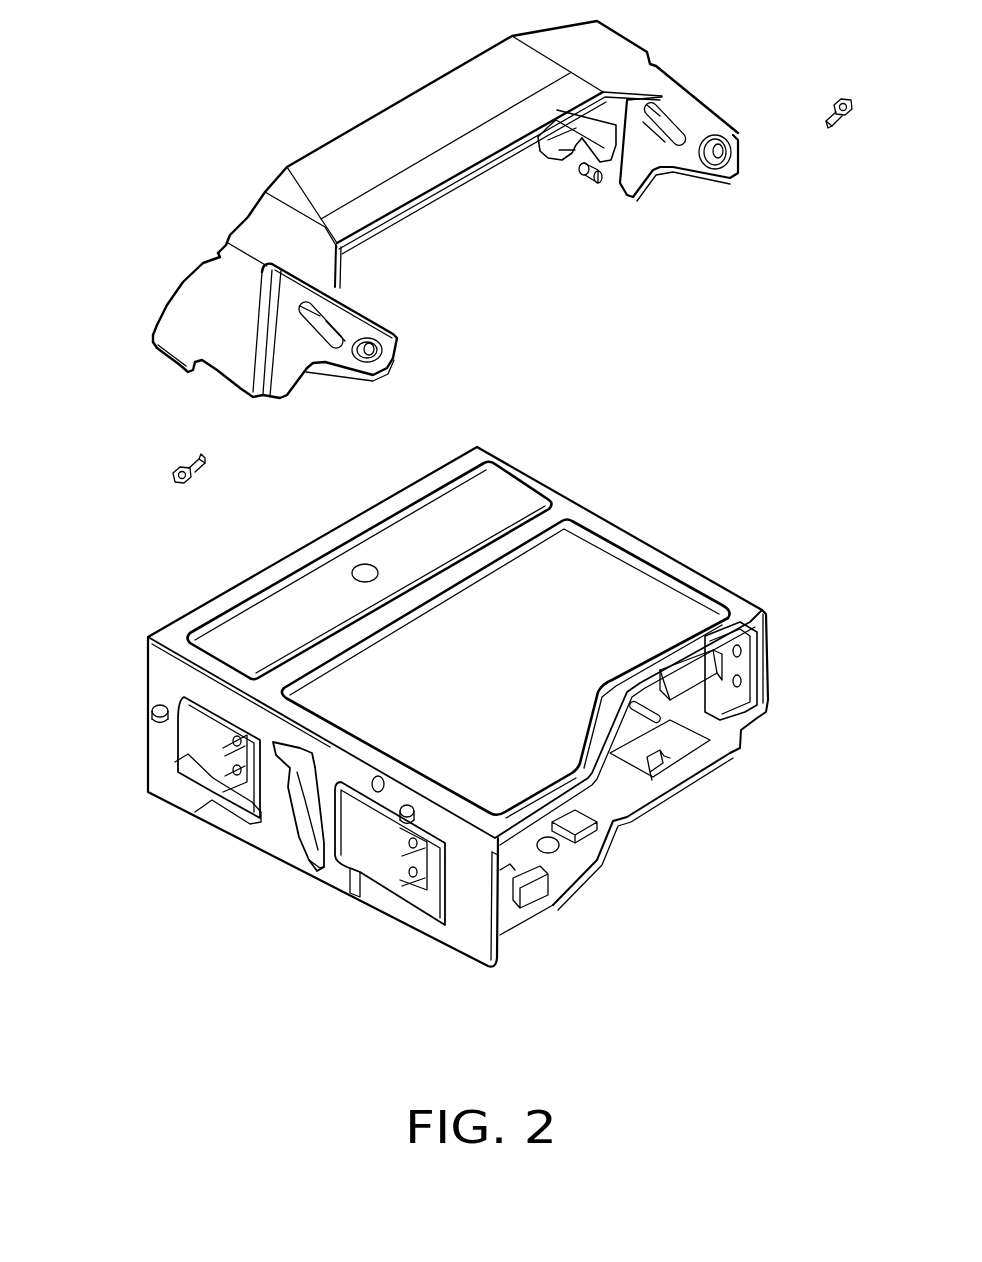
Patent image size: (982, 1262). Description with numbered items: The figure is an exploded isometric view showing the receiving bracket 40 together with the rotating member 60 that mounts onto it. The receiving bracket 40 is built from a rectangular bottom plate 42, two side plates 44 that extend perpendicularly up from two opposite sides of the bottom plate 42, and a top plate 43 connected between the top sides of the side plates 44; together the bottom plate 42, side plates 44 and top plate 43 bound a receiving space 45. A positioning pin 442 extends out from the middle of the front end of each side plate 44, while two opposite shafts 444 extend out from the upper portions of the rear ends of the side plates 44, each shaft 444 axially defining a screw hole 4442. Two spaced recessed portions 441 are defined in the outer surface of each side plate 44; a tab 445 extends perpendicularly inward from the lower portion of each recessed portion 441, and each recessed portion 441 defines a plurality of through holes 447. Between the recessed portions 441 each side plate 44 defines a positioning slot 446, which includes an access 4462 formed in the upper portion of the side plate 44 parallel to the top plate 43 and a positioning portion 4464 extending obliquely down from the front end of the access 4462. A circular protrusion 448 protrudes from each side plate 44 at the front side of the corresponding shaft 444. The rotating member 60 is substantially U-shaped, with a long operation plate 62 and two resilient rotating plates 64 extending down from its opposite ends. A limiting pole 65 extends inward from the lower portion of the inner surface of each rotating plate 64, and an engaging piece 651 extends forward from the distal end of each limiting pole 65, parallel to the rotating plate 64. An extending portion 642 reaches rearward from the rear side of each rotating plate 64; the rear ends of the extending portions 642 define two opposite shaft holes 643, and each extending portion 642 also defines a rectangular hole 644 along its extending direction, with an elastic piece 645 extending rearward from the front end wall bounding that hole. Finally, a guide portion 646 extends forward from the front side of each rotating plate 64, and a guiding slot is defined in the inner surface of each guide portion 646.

The receiving bracket 40 is at (185, 565).
The bottom plate 42 is at (710, 767).
The top plate 43 is at (563, 510).
The side plate 44 is at (158, 667).
The receiving space 45 is at (633, 793).
The recessed portion 441 is at (245, 800).
The positioning pin 442 is at (152, 712).
The shaft 444 is at (487, 882).
The tab 445 is at (767, 713).
The positioning slot 446 is at (268, 948).
The through hole 447 is at (235, 765).
The circular protrusion 448 is at (357, 905).
The screw hole 4442 is at (398, 897).
The access 4462 is at (320, 858).
The positioning portion 4464 is at (297, 813).
The rotating member 60 is at (325, 107).
The operation plate 62 is at (462, 97).
The rotating plate 64 is at (237, 360).
The limiting pole 65 is at (585, 178).
The extending portion 642 is at (343, 318).
The shaft hole 643 is at (713, 167).
The rectangular hole 644 is at (667, 130).
The elastic piece 645 is at (668, 108).
The guide portion 646 is at (180, 315).
The engaging piece 651 is at (582, 167).